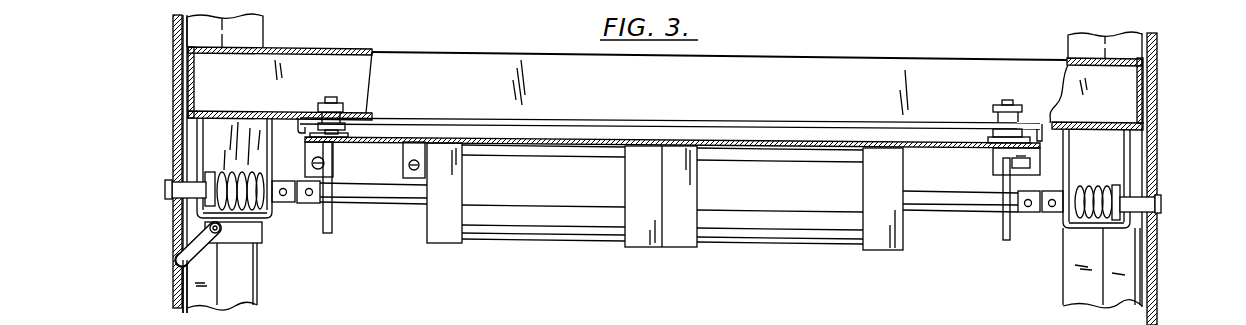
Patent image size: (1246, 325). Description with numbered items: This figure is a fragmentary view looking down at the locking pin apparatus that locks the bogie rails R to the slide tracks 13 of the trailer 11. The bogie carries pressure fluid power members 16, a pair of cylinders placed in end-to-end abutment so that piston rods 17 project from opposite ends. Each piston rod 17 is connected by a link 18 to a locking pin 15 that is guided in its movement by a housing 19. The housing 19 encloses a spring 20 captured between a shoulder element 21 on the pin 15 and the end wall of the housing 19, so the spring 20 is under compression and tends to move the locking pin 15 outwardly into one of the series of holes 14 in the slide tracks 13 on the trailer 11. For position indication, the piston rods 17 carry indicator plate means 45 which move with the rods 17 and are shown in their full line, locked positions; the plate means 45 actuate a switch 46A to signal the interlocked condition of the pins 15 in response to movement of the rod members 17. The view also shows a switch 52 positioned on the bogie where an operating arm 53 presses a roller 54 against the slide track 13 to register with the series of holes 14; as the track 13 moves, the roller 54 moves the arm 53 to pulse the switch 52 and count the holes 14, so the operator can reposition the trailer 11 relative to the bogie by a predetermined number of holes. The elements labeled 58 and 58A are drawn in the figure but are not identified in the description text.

The trailer 11 is at (1224, 321).
The slide track 13 is at (173, 97).
The hole 14 is at (173, 49).
The locking pin 15 is at (163, 197).
The pressure fluid power member 16 is at (558, 230).
The piston rod 17 is at (375, 198).
The link 18 is at (285, 201).
The housing 19 is at (212, 134).
The spring 20 is at (246, 168).
The shoulder element 21 is at (213, 163).
The indicator plate means 45 is at (330, 234).
The switch 46A is at (993, 160).
The switch 52 is at (257, 236).
The operating arm 53 is at (200, 254).
The roller 54 is at (173, 285).
The rod 58 is at (680, 93).
The glass panel 58A is at (822, 60).
The bogie rail R is at (238, 303).